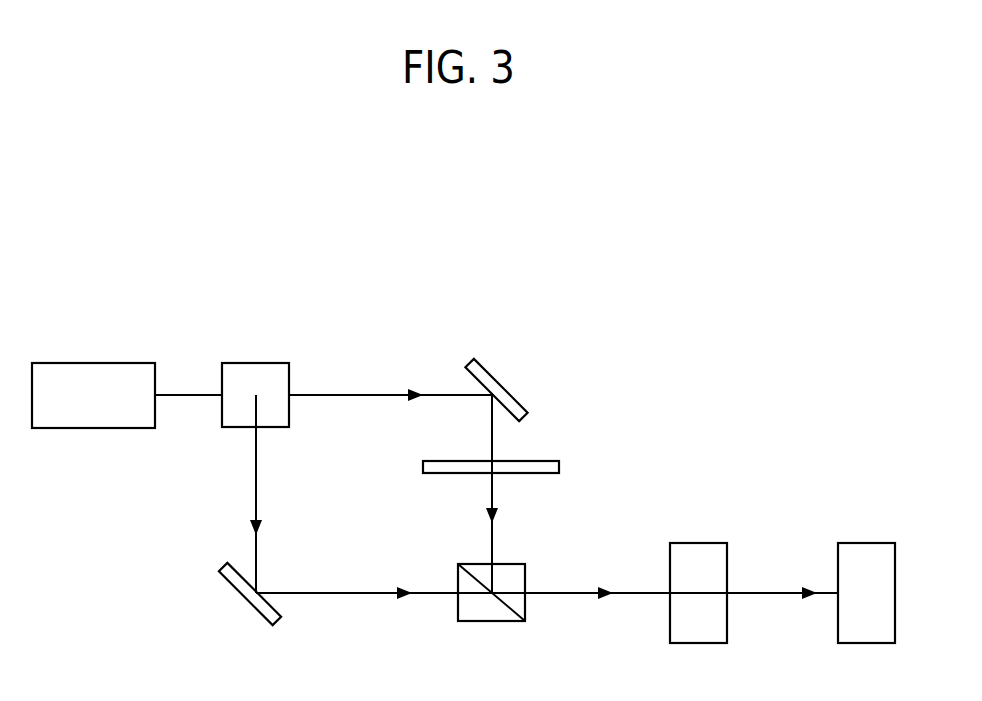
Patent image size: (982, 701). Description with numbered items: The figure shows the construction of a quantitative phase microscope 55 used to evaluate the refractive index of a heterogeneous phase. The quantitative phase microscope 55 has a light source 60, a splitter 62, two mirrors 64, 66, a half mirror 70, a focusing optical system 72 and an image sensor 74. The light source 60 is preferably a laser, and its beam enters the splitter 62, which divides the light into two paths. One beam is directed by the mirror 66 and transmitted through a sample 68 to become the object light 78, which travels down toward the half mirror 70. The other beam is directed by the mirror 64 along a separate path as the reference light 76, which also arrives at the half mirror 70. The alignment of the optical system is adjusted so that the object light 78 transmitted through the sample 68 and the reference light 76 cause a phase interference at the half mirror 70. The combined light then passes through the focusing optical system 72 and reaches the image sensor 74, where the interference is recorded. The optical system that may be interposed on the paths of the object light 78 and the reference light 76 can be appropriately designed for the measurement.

The quantitative phase microscope 55 is at (470, 181).
The light source 60 is at (80, 363).
The splitter 62 is at (260, 363).
The mirror 64 is at (232, 590).
The mirror 66 is at (486, 368).
The sample 68 is at (540, 461).
The half mirror 70 is at (478, 621).
The focusing optical system 72 is at (693, 543).
The image sensor 74 is at (855, 543).
The reference light 76 is at (398, 598).
The object light 78 is at (493, 520).